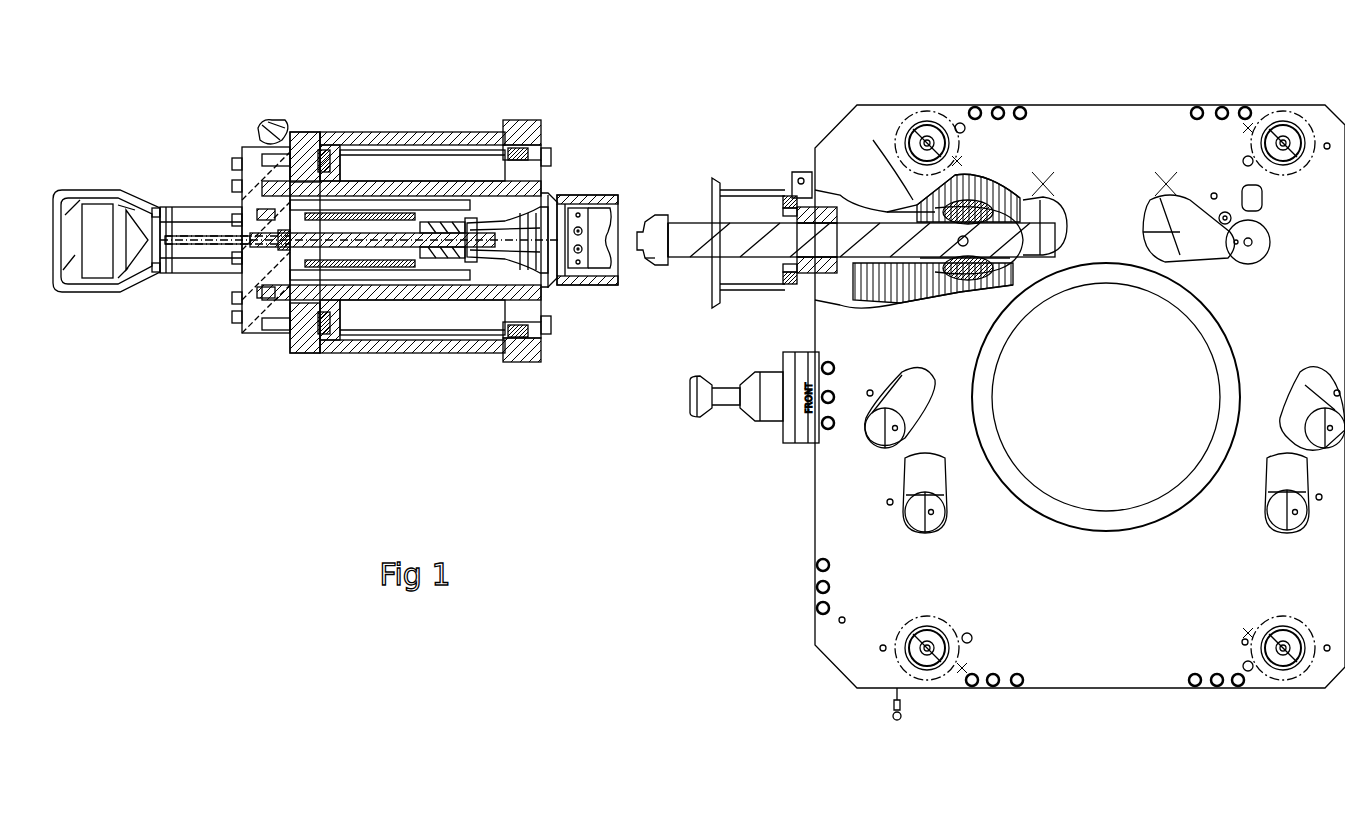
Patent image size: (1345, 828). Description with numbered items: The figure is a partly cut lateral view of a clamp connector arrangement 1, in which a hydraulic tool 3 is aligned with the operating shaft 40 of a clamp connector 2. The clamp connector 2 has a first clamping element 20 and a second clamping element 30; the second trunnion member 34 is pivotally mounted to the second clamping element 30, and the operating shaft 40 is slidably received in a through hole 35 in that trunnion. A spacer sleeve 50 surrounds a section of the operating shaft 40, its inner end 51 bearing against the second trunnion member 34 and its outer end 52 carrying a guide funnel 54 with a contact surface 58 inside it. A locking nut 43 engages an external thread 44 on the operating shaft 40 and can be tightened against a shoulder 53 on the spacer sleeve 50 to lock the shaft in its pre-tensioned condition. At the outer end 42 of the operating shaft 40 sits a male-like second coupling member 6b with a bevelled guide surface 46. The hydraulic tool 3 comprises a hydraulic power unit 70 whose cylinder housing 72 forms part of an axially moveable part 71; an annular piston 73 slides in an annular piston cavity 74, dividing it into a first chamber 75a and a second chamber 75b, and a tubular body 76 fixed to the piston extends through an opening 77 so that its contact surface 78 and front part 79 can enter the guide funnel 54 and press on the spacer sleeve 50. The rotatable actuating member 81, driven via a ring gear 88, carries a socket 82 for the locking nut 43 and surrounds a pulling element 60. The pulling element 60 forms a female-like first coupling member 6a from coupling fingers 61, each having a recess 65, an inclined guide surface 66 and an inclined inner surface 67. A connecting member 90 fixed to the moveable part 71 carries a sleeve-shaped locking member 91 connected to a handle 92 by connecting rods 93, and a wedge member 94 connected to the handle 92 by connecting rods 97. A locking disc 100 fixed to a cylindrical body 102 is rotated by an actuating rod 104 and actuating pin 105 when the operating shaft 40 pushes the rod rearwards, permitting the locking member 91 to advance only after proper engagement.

The clamp connector arrangement 1 is at (530, 465).
The clamp connector 2 is at (778, 493).
The hydraulic tool 3 is at (265, 400).
The first coupling member 6a is at (540, 290).
The second coupling member 6b is at (668, 218).
The first clamping element 20 is at (1200, 245).
The second clamping element 30 is at (895, 295).
The second trunnion member 34 is at (968, 280).
The through hole 35 is at (975, 210).
The operating shaft 40 is at (700, 250).
The outer end 42 is at (637, 225).
The locking nut 43 is at (800, 270).
The external thread 44 is at (820, 205).
The bevelled guide surface 46 is at (645, 262).
The spacer sleeve 50 is at (850, 205).
The inner end 51 is at (950, 275).
The outer end 52 is at (716, 180).
The shoulder 53 is at (835, 200).
The guide funnel 54 is at (725, 295).
The contact surface 58 is at (785, 203).
The pulling element 60 is at (355, 262).
The coupling fingers 61 is at (470, 240).
The recess 65 is at (525, 225).
The inclined guide surface 66 is at (522, 265).
The inclined inner surface 67 is at (392, 218).
The hydraulic power unit 70 is at (518, 110).
The axially moveable part 71 is at (320, 126).
The cylinder housing 72 is at (425, 138).
The annular piston 73 is at (332, 150).
The annular piston cavity 74 is at (448, 150).
The first chamber 75a is at (312, 152).
The second chamber 75b is at (475, 140).
The tubular body 76 is at (425, 185).
The opening 77 is at (545, 152).
The contact surface 78 is at (612, 210).
The front part 79 is at (595, 198).
The actuating member 81 is at (370, 188).
The socket 82 is at (610, 280).
The ring gear 88 is at (262, 298).
The connecting member 90 is at (248, 142).
The locking member 91 is at (480, 258).
The handle 92 is at (98, 195).
The connecting rods 93 is at (195, 270).
The wedge member 94 is at (400, 245).
The connecting rods 97 is at (172, 210).
The locking disc 100 is at (290, 245).
The cylindrical body 102 is at (262, 212).
The actuating rod 104 is at (440, 225).
The actuating pin 105 is at (245, 233).